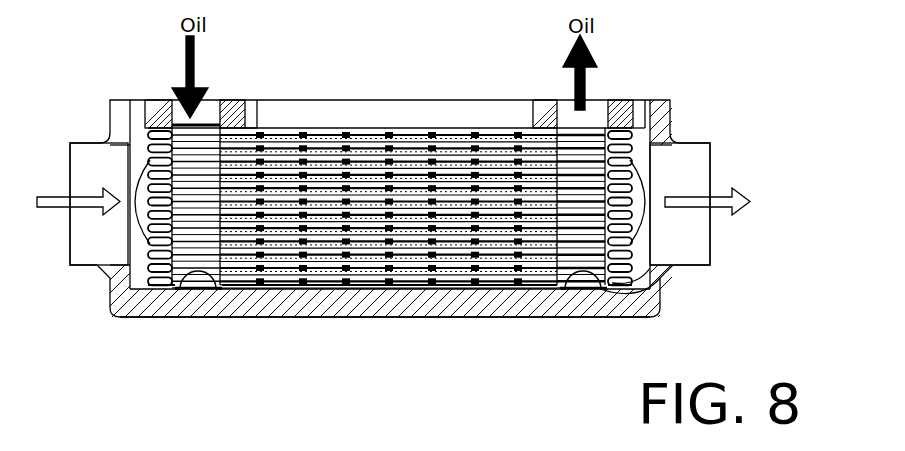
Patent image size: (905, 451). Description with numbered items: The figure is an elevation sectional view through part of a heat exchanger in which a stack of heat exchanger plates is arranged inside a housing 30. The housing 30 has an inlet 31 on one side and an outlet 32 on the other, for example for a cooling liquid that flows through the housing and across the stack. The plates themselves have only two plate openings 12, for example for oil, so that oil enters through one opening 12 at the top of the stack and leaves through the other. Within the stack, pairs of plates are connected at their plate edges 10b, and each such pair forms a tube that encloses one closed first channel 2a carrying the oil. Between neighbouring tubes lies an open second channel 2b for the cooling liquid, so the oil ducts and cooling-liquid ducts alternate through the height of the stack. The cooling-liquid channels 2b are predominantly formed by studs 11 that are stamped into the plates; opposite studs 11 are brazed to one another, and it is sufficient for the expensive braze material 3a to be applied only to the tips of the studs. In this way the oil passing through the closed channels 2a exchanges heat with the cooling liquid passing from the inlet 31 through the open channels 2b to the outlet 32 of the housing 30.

The studs 11 is at (463, 128).
The plate opening 12 is at (165, 100).
The first channel 2a is at (400, 318).
The second channel 2b is at (462, 302).
The braze material 3a is at (346, 282).
The housing 30 is at (530, 300).
The inlet 31 is at (98, 250).
The outlet 32 is at (672, 250).
The plate edges 10b is at (604, 302).